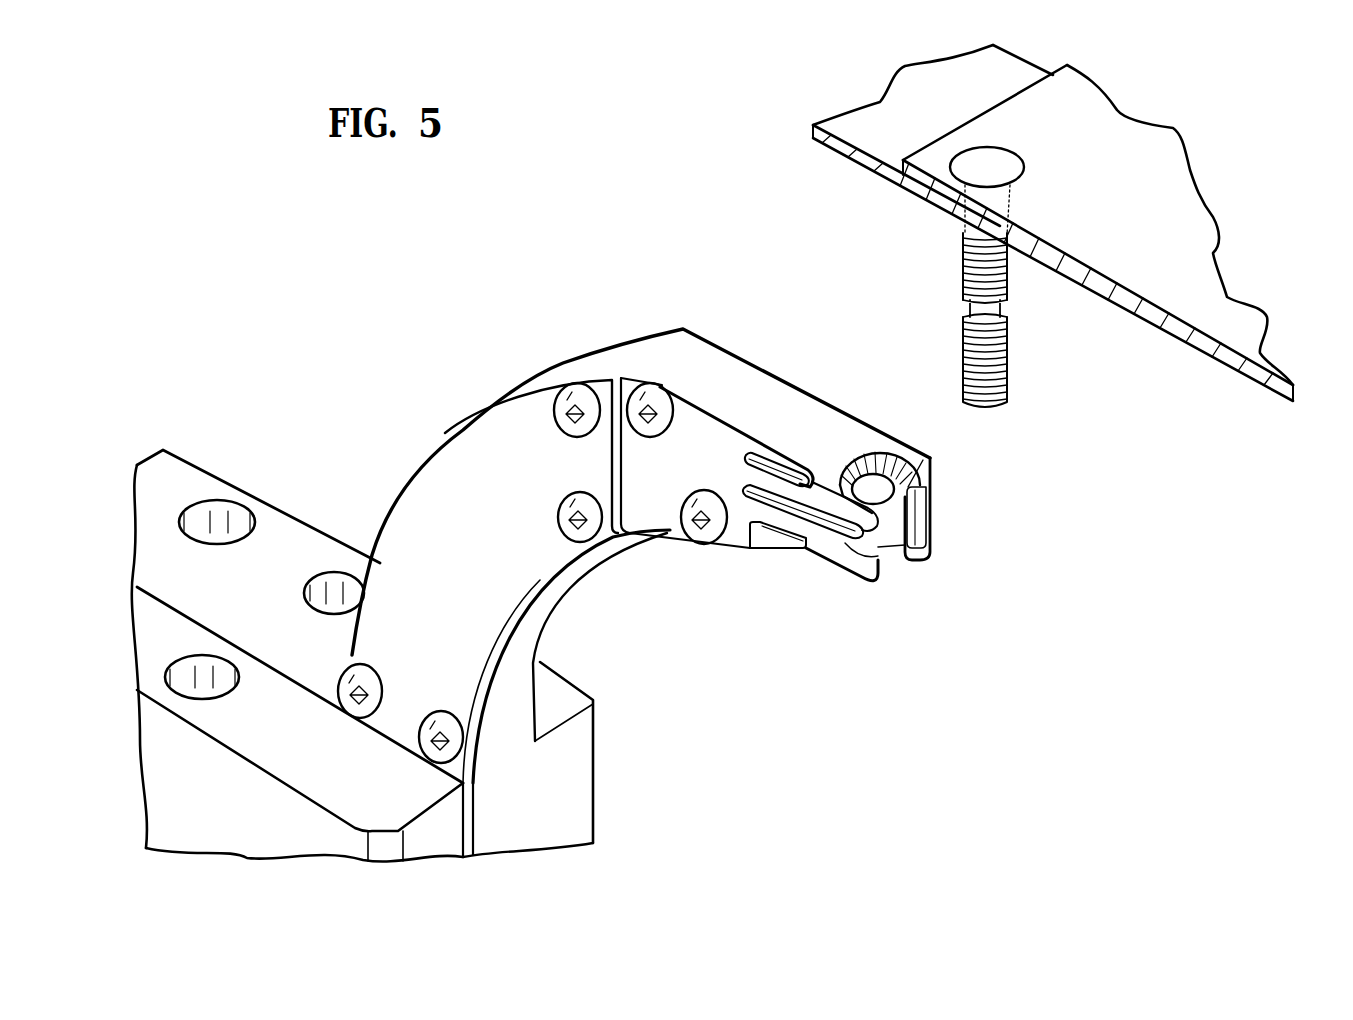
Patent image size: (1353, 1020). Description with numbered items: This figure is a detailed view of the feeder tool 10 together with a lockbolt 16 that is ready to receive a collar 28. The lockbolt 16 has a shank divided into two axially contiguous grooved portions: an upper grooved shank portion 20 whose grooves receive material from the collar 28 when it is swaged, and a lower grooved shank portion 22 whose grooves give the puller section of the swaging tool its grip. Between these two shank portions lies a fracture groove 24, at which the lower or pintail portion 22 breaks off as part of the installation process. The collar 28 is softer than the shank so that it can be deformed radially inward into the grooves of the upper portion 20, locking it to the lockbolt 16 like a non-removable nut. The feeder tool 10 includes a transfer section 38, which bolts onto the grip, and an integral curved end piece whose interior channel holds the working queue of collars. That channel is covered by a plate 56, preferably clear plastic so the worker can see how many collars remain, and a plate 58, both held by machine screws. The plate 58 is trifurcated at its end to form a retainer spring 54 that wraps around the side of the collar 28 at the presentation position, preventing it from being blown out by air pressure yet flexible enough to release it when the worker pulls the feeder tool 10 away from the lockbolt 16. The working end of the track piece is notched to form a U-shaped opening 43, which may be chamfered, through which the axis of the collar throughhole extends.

The feeder tool 10 is at (445, 375).
The lockbolt 16 is at (1010, 165).
The upper grooved shank portion 20 is at (963, 262).
The lower grooved shank portion 22 is at (963, 348).
The fracture groove 24 is at (1007, 305).
The collar 28 is at (893, 557).
The transfer section 38 is at (292, 533).
The U-shaped opening 43 is at (917, 523).
The retainer spring 54 is at (867, 538).
The plate 56 is at (503, 580).
The plate 58 is at (705, 447).